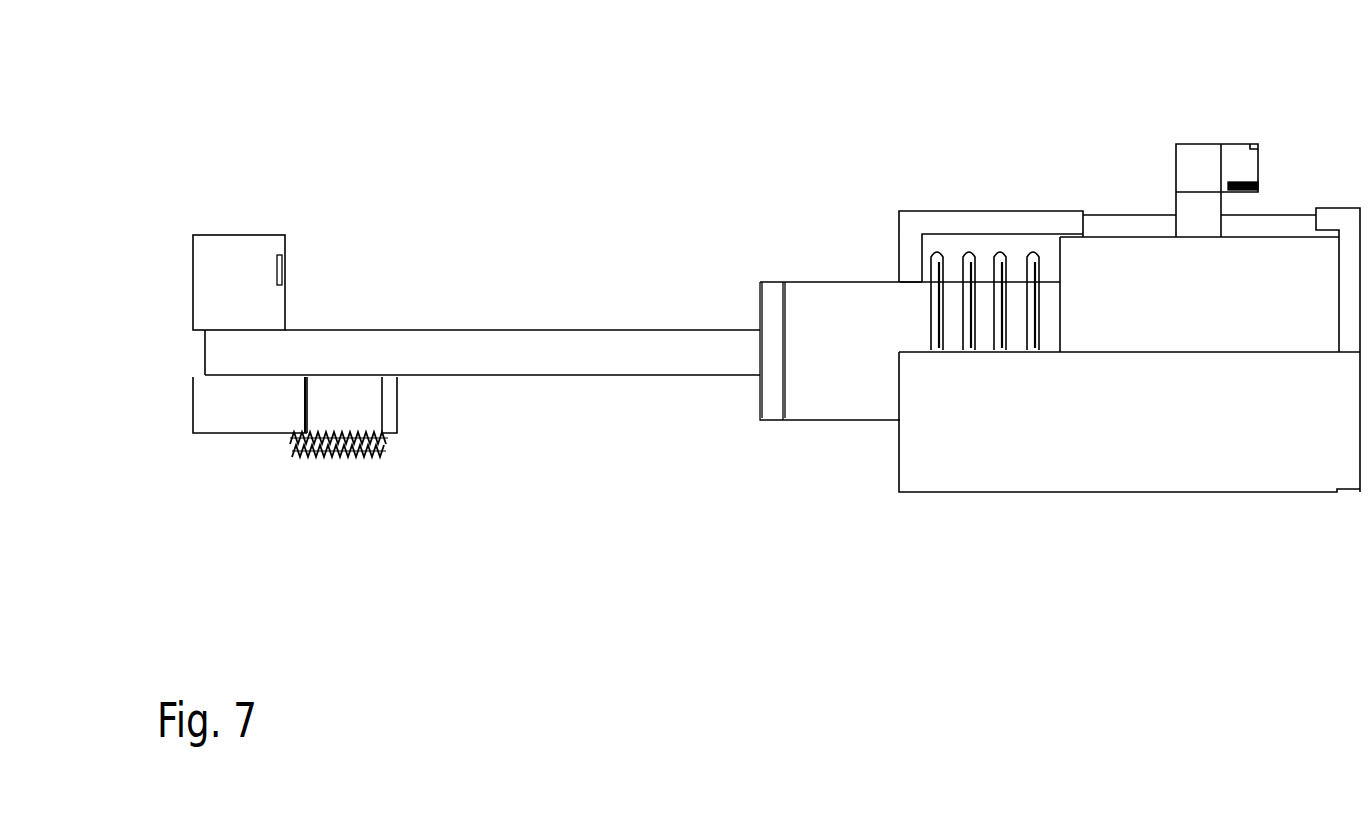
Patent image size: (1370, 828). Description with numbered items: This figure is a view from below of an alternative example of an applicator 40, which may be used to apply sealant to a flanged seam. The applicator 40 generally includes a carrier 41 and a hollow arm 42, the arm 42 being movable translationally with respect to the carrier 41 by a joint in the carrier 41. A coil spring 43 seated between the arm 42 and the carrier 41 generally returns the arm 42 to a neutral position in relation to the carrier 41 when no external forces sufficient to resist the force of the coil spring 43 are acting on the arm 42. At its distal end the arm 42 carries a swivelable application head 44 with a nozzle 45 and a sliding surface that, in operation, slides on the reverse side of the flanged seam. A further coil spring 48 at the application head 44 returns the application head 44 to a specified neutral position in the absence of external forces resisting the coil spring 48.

The applicator 40 is at (552, 121).
The carrier 41 is at (1262, 481).
The hollow arm 42 is at (605, 352).
The coil spring 43 is at (995, 258).
The application head 44 is at (186, 263).
The nozzle 45 is at (284, 268).
The coil spring 48 is at (355, 455).